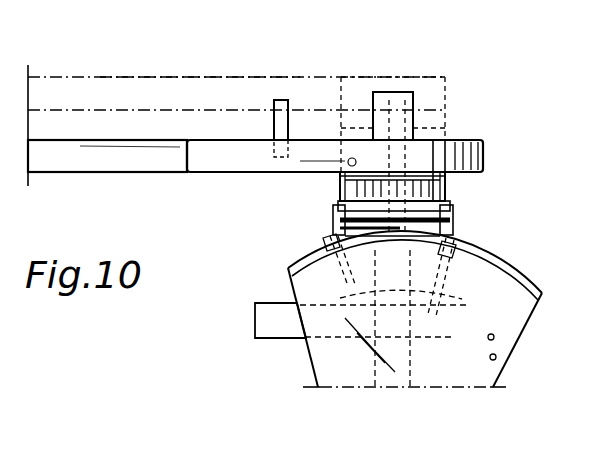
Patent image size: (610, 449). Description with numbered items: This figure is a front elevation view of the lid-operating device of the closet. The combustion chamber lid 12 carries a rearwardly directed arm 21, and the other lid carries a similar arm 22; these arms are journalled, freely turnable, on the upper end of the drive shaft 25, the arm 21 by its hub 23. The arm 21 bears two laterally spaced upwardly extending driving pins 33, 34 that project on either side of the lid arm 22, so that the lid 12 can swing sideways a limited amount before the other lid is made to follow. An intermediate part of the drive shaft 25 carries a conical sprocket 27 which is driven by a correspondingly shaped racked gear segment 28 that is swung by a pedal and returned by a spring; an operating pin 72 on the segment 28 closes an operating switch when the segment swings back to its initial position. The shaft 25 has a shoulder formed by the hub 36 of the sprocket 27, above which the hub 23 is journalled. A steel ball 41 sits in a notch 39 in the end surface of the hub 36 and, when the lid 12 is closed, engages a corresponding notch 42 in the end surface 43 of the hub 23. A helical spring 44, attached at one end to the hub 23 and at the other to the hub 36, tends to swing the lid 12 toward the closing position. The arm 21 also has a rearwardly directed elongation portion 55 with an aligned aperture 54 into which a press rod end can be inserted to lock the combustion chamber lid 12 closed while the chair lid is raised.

The combustion chamber lid 12 is at (78, 166).
The arm 21 is at (221, 163).
The arm 22 is at (185, 90).
The driving pin 33 is at (287, 102).
The driving pin 34 is at (430, 73).
The drive shaft 25 is at (402, 108).
The elongation portion 55 is at (485, 148).
The aperture 54 is at (465, 163).
The notch 42 is at (450, 192).
The steel ball 41 is at (442, 214).
The hub 23 is at (340, 179).
The end surface 43 is at (340, 200).
The hub 36 is at (333, 215).
The notch 39 is at (450, 215).
The helical spring 44 is at (330, 228).
The conical sprocket 27 is at (445, 243).
The racked gear segment 28 is at (517, 300).
The operating pin 72 is at (497, 357).